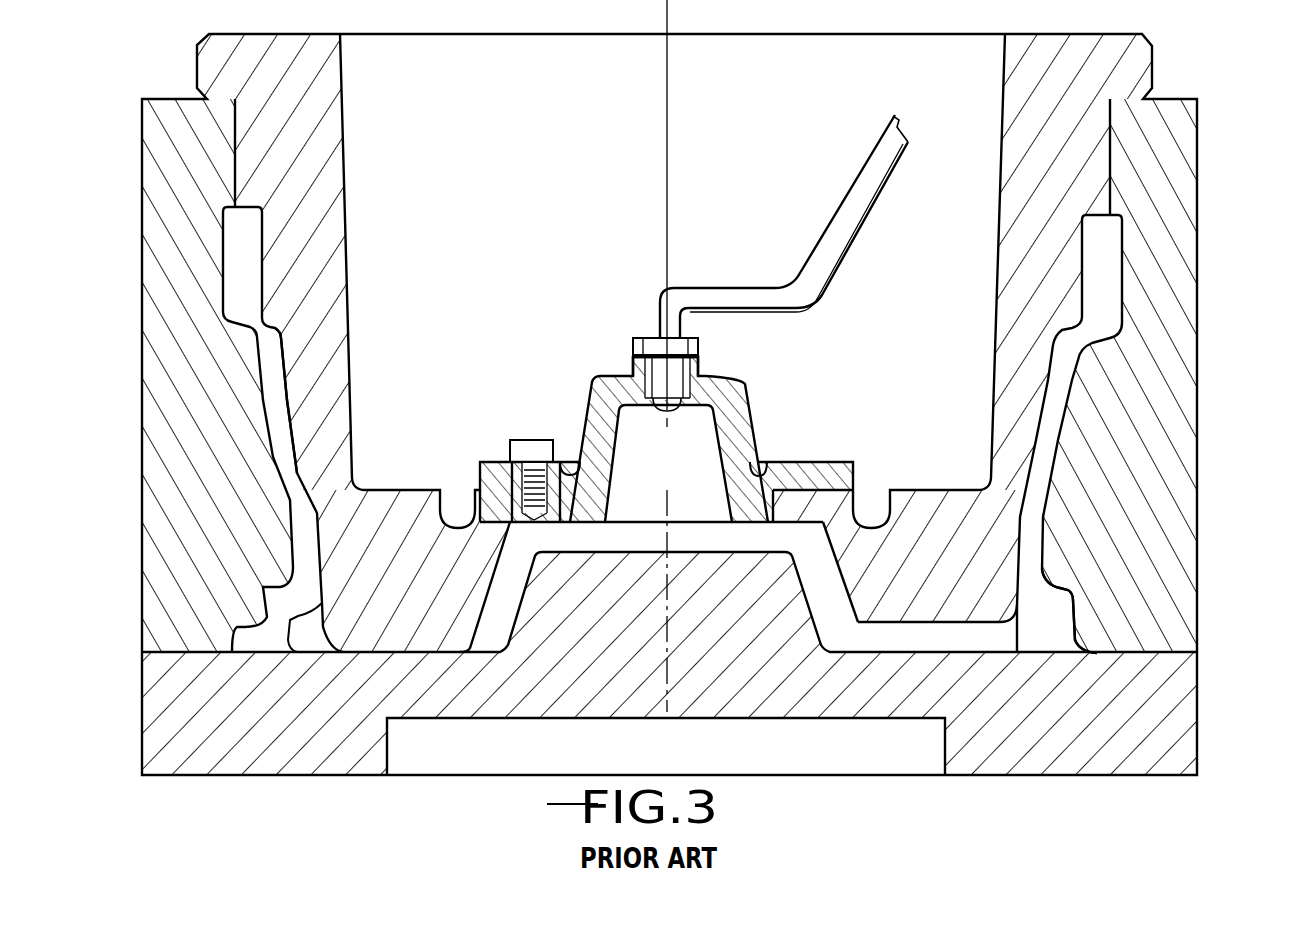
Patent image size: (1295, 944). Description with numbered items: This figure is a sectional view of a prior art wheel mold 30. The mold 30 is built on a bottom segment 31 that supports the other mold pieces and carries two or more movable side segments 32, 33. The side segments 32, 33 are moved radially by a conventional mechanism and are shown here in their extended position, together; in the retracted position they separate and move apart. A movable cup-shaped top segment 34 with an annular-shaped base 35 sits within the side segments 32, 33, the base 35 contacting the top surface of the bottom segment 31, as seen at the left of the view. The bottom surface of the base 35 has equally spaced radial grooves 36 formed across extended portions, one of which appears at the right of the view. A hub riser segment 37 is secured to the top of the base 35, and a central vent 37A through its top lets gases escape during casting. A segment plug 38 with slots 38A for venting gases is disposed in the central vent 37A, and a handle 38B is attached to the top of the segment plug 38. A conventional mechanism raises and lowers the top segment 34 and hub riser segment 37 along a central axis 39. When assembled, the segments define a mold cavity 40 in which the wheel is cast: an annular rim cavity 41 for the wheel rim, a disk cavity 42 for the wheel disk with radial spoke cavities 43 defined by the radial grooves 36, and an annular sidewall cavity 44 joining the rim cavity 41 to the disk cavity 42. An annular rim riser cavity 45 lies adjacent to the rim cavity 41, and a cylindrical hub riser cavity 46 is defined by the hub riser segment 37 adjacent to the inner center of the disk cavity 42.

The mold 30 is at (1174, 82).
The bottom segment 31 is at (184, 745).
The side segment 32 is at (152, 460).
The side segment 33 is at (1180, 365).
The top segment 34 is at (323, 435).
The base 35 is at (407, 589).
The radial grooves 36 is at (920, 630).
The hub riser segment 37 is at (735, 431).
The central vent 37A is at (703, 367).
The segment plug 38 is at (700, 348).
The slots 38A is at (672, 424).
The handle 38B is at (845, 252).
The central axis 39 is at (667, 200).
The mold cavity 40 is at (1060, 412).
The rim cavity 41 is at (278, 405).
The disk cavity 42 is at (850, 650).
The radial spoke cavities 43 is at (947, 640).
The sidewall cavity 44 is at (1033, 628).
The rim riser cavity 45 is at (250, 270).
The hub riser cavity 46 is at (685, 484).